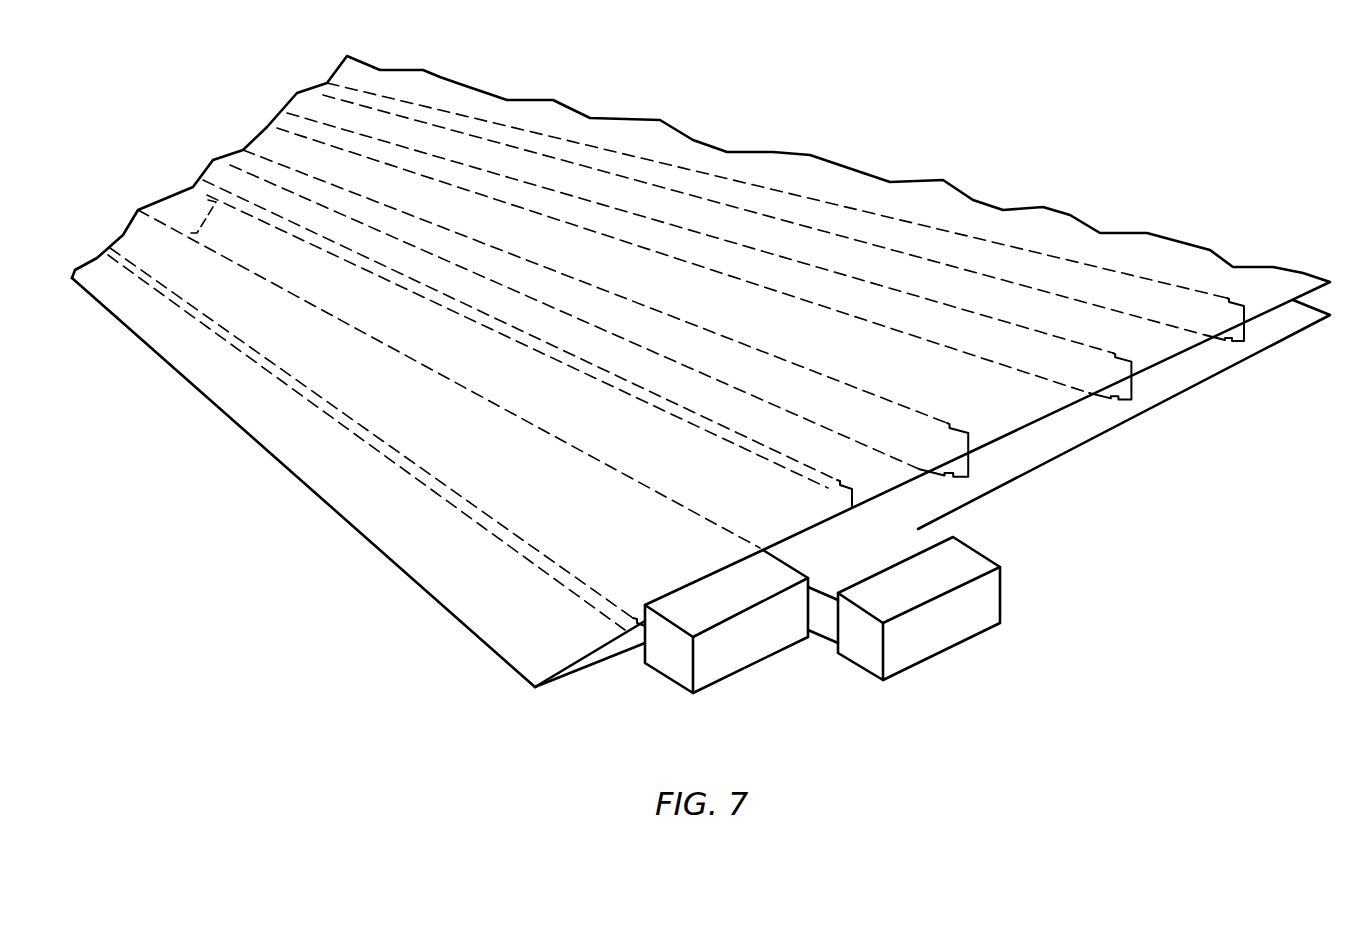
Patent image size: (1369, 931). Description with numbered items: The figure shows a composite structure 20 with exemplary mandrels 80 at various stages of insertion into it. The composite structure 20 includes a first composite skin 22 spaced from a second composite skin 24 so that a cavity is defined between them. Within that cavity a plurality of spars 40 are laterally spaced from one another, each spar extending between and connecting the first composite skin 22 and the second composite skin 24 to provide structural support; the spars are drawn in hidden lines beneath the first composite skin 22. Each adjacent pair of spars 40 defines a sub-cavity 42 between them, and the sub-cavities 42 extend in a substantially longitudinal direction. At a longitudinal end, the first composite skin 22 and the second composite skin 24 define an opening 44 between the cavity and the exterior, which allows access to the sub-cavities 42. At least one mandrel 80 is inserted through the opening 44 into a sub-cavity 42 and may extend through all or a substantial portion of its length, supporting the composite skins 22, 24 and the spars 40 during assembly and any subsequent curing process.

The composite structure 20 is at (701, 394).
The first composite skin 22 is at (283, 443).
The second composite skin 24 is at (1092, 422).
The plurality of spars 40 is at (963, 462).
The sub-cavity 42 is at (797, 502).
The opening 44 is at (1012, 541).
The mandrel 80 is at (761, 650).